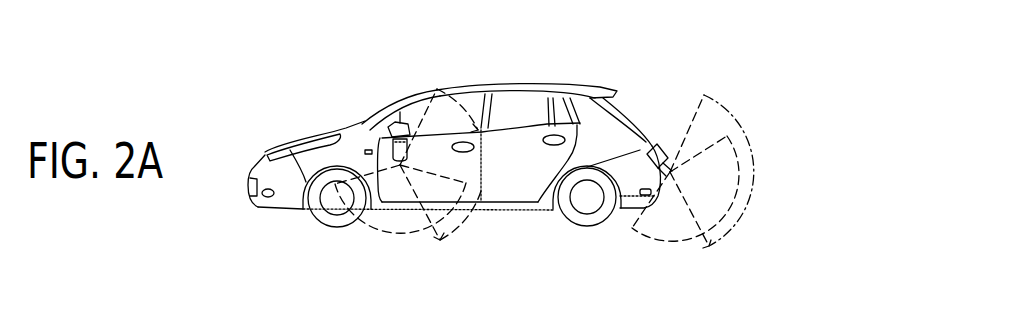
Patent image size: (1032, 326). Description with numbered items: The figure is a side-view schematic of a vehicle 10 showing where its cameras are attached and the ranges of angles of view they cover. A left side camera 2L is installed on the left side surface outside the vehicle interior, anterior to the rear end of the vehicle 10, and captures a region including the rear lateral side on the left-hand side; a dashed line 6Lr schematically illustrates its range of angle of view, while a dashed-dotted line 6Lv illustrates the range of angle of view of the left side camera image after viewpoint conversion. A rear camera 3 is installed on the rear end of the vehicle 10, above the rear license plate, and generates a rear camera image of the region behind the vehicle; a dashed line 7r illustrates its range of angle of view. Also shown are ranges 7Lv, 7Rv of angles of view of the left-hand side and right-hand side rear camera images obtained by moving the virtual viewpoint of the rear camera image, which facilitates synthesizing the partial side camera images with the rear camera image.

The vehicle 10 is at (296, 141).
The left side camera 2L is at (388, 143).
The range of angle of view of left side camera image after viewpoint conversion 6Lv is at (475, 86).
The range of angle of view of left side camera 6Lr is at (372, 226).
The rear camera 3 is at (667, 165).
The range of angle of view of left-hand side rear camera image 7Lv is at (771, 171).
The range of angle of view of right-hand side rear camera image 7Rv is at (755, 152).
The range of angle of view of rear camera 7r is at (668, 240).